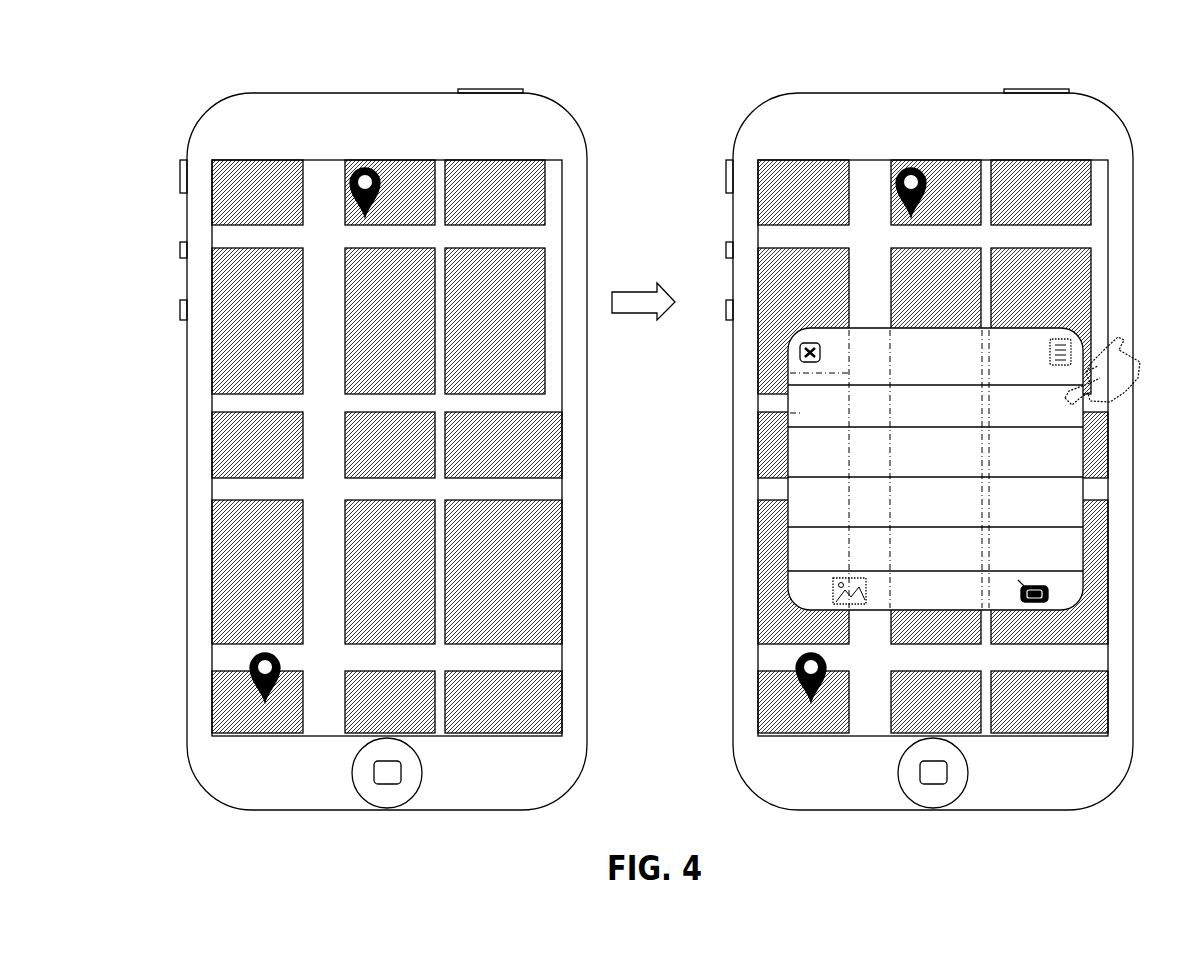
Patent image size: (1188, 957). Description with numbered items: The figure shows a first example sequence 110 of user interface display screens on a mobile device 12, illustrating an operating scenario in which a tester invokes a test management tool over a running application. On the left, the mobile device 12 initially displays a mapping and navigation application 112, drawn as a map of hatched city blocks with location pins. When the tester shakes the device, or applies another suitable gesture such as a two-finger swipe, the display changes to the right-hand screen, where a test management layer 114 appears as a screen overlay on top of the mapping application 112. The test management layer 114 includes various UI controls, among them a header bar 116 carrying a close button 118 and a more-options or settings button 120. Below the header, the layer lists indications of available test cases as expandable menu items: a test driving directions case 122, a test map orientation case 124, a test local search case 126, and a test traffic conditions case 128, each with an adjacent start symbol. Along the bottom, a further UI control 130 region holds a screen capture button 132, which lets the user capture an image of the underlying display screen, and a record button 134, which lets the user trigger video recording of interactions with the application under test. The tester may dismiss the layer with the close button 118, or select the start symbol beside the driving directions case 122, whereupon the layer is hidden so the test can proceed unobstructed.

The mobile device 12 is at (357, 91).
The first example sequence 110 is at (560, 55).
The mapping application UI display screen 112 is at (421, 156).
The test management layer 114 is at (877, 319).
The header bar 116 is at (780, 363).
The close button 118 is at (862, 354).
The more-options button 120 is at (1050, 353).
The test driving directions case 122 is at (788, 408).
The test map orientation case 124 is at (788, 456).
The test local search case 126 is at (788, 500).
The test traffic conditions case 128 is at (788, 547).
The UI control 130 is at (780, 587).
The screen capture button 132 is at (867, 595).
The record button 134 is at (1021, 595).